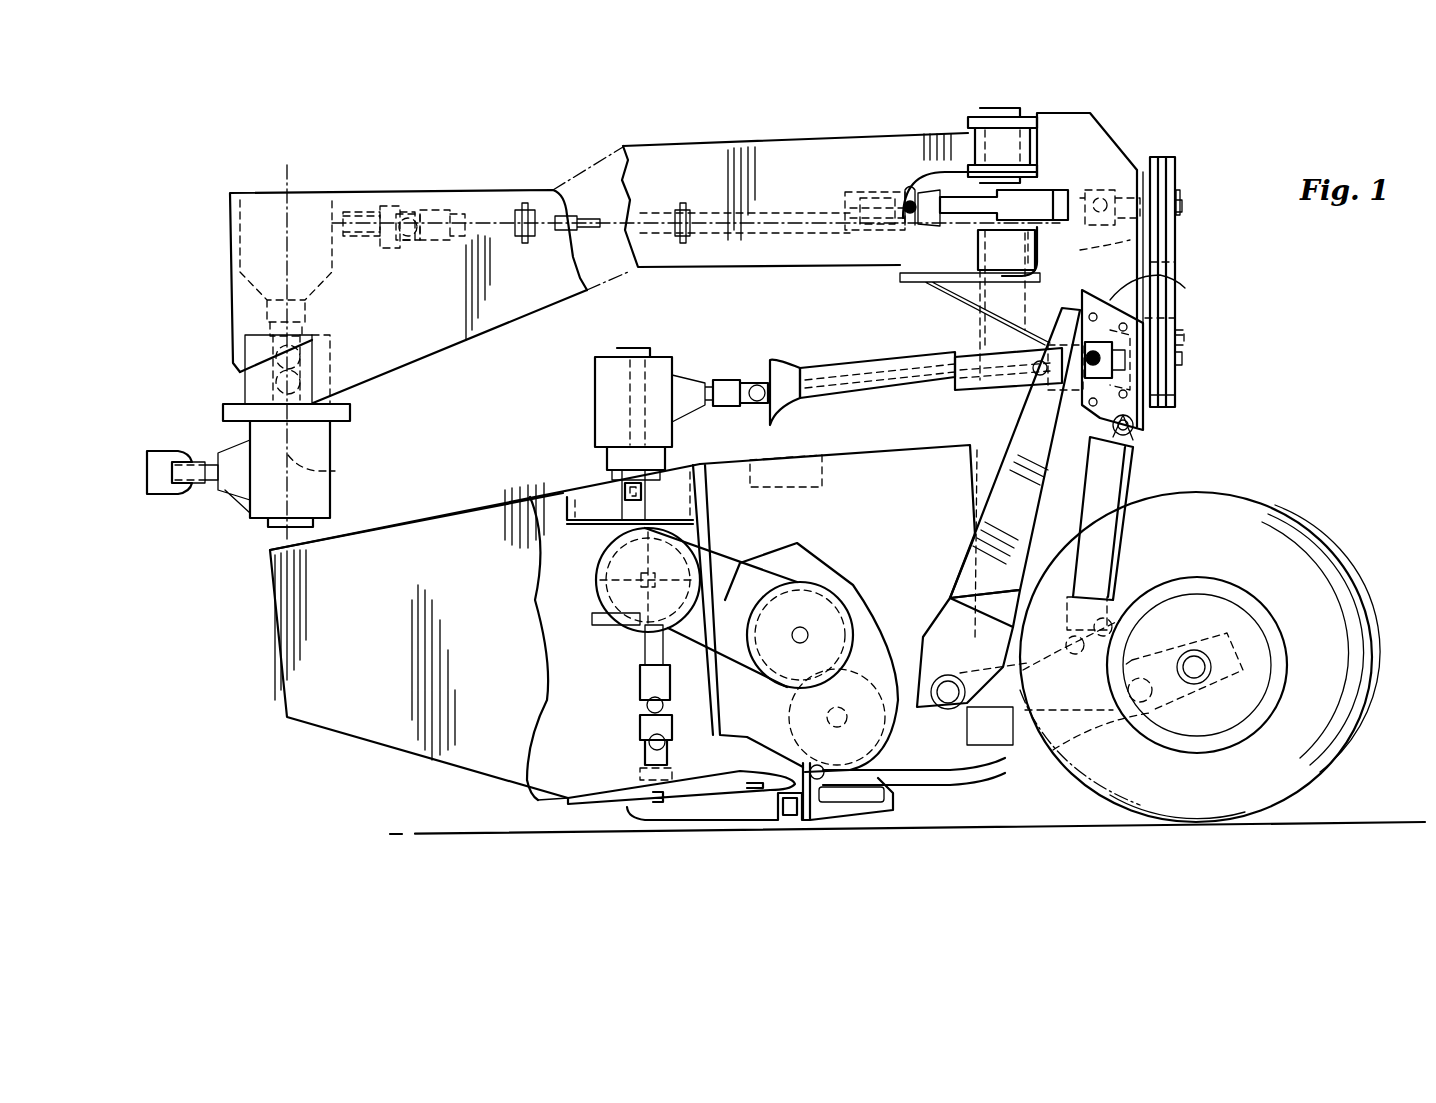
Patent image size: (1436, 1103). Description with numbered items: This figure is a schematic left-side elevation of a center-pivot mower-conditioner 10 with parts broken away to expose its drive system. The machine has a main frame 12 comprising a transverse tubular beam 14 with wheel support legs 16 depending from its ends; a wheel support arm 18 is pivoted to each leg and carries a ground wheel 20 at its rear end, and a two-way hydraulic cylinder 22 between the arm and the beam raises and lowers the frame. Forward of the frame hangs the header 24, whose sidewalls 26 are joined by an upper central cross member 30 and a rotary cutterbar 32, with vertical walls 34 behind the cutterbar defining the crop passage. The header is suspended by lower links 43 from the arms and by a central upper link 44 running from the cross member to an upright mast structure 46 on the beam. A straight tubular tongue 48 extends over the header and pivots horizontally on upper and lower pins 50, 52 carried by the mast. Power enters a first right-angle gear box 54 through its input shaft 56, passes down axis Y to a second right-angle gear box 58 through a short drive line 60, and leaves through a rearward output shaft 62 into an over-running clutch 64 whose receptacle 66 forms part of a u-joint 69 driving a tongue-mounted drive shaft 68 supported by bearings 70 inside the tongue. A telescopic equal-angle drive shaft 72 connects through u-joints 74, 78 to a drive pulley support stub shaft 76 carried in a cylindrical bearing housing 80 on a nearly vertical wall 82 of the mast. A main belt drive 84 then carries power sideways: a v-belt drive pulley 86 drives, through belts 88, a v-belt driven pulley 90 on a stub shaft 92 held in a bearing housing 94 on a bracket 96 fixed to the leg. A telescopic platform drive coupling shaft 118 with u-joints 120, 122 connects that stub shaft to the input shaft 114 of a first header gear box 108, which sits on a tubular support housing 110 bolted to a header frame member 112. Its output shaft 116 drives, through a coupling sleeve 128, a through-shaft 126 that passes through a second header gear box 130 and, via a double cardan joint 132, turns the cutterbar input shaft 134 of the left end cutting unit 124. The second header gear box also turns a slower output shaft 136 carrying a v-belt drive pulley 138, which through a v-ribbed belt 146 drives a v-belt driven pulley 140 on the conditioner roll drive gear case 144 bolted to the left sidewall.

The center-pivot mower-conditioner 10 is at (1243, 380).
The main frame 12 is at (968, 455).
The transverse tubular beam 14 is at (1165, 300).
The wheel support legs 16 is at (1034, 517).
The wheel support arms 18 is at (1008, 720).
The ground wheel 20 is at (1282, 510).
The two-way hydraulic cylinder 22 is at (1135, 460).
The header 24 is at (440, 505).
The sidewalls 26 is at (380, 648).
The upper central cross member 30 is at (815, 487).
The rotary cutterbar 32 is at (545, 840).
The vertical walls 34 is at (735, 460).
The lower links 43 is at (918, 800).
The upper link 44 is at (930, 400).
The upright mast structure 46 is at (1105, 125).
The tubular tongue 48 is at (800, 135).
The upper pivot pin 50 is at (1003, 108).
The lower pivot pin 52 is at (975, 232).
The first right-angle gear box 54 is at (262, 497).
The input shaft 56 is at (200, 450).
The second right-angle gear box 58 is at (235, 300).
The short drive line 60 is at (245, 385).
The output shaft 62 is at (350, 210).
The over-running clutch 64 is at (385, 205).
The cylindrical receptacle 66 is at (375, 270).
The tongue-mounted drive shaft 68 is at (575, 212).
The u-joint 69 is at (432, 270).
The bearings 70 is at (530, 203).
The telescopic equal-angle drive shaft 72 is at (1045, 180).
The u-joint 74 is at (905, 185).
The drive pulley support stub shaft 76 is at (1140, 160).
The u-joint 78 is at (1135, 172).
The cylindrical bearing housing 80 is at (1125, 230).
The nearly vertical wall 82 is at (1140, 262).
The main belt drive 84 is at (1182, 193).
The v-belt drive pulley 86 is at (1175, 265).
The belts 88 is at (1175, 275).
The v-belt driven pulley 90 is at (1185, 345).
The stub shaft 92 is at (1083, 305).
The cylindrical bearing housing 94 is at (1178, 392).
The bracket 96 is at (1140, 427).
The first header gear box 108 is at (595, 372).
The tubular support housing 110 is at (598, 460).
The header frame member 112 is at (530, 548).
The input shaft 114 is at (705, 378).
The output shaft 116 is at (660, 357).
The telescopic platform drive coupling shaft 118 is at (855, 365).
The u-joint 120 is at (1077, 393).
The u-joint 122 is at (747, 375).
The left end cutting unit 124 is at (560, 775).
The through-shaft 126 is at (640, 660).
The coupling sleeve 128 is at (620, 492).
The second header gear box 130 is at (600, 562).
The double cardan joint 132 is at (640, 705).
The cutterbar input shaft 134 is at (645, 762).
The output shaft 136 is at (612, 636).
The v-belt drive pulley 138 is at (610, 585).
The v-belt driven pulley 140 is at (840, 605).
The conditioner roll drive gear case 144 is at (815, 560).
The v-ribbed belt 146 is at (735, 556).